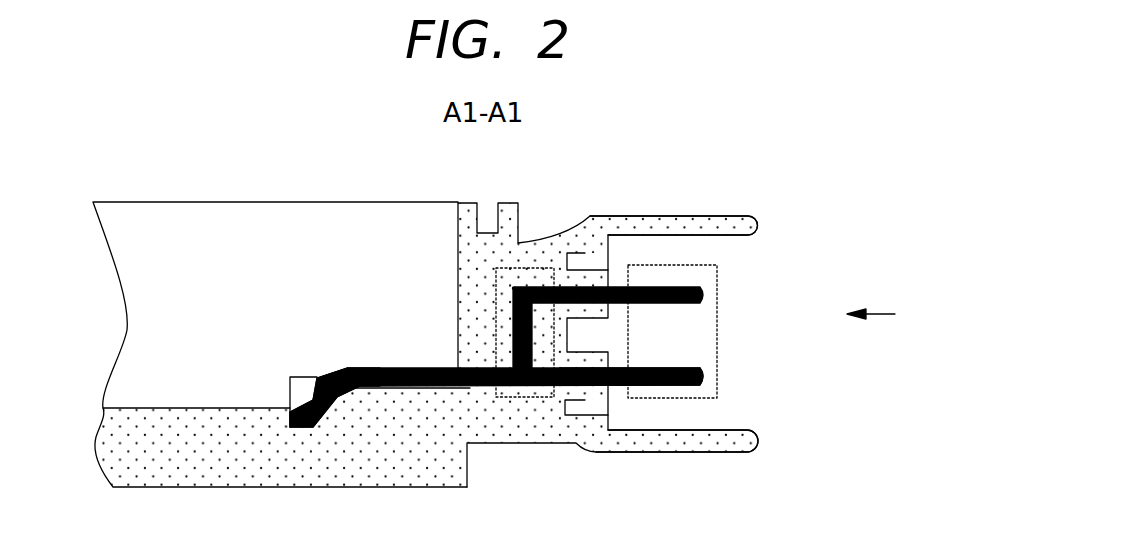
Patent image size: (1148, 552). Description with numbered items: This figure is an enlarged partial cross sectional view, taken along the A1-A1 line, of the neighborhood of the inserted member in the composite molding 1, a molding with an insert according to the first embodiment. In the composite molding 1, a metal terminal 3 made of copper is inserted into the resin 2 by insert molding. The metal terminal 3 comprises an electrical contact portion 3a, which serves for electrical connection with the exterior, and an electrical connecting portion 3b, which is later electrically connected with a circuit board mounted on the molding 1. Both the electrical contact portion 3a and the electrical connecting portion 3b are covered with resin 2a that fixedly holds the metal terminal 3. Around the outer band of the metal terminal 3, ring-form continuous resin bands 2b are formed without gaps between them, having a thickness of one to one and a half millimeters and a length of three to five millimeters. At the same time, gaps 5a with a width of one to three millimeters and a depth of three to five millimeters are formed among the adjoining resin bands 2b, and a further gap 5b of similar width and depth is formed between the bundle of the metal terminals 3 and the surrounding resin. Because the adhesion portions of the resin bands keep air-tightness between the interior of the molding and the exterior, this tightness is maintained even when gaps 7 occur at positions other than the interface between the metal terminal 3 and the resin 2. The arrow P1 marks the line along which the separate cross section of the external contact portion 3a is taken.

The composite molding 1 is at (177, 217).
The resin 2 is at (476, 247).
The resin for fixedly holding the metal terminals 2a is at (527, 283).
The ring-form continuous resin band 2b is at (580, 268).
The metal terminal 3 is at (438, 366).
The electrical contact portion 3a is at (668, 386).
The electrical connecting portion 3b is at (372, 368).
The gap 5a is at (587, 337).
The gap 5b is at (592, 262).
The gap 7 is at (510, 291).
The section line P1 is at (889, 317).